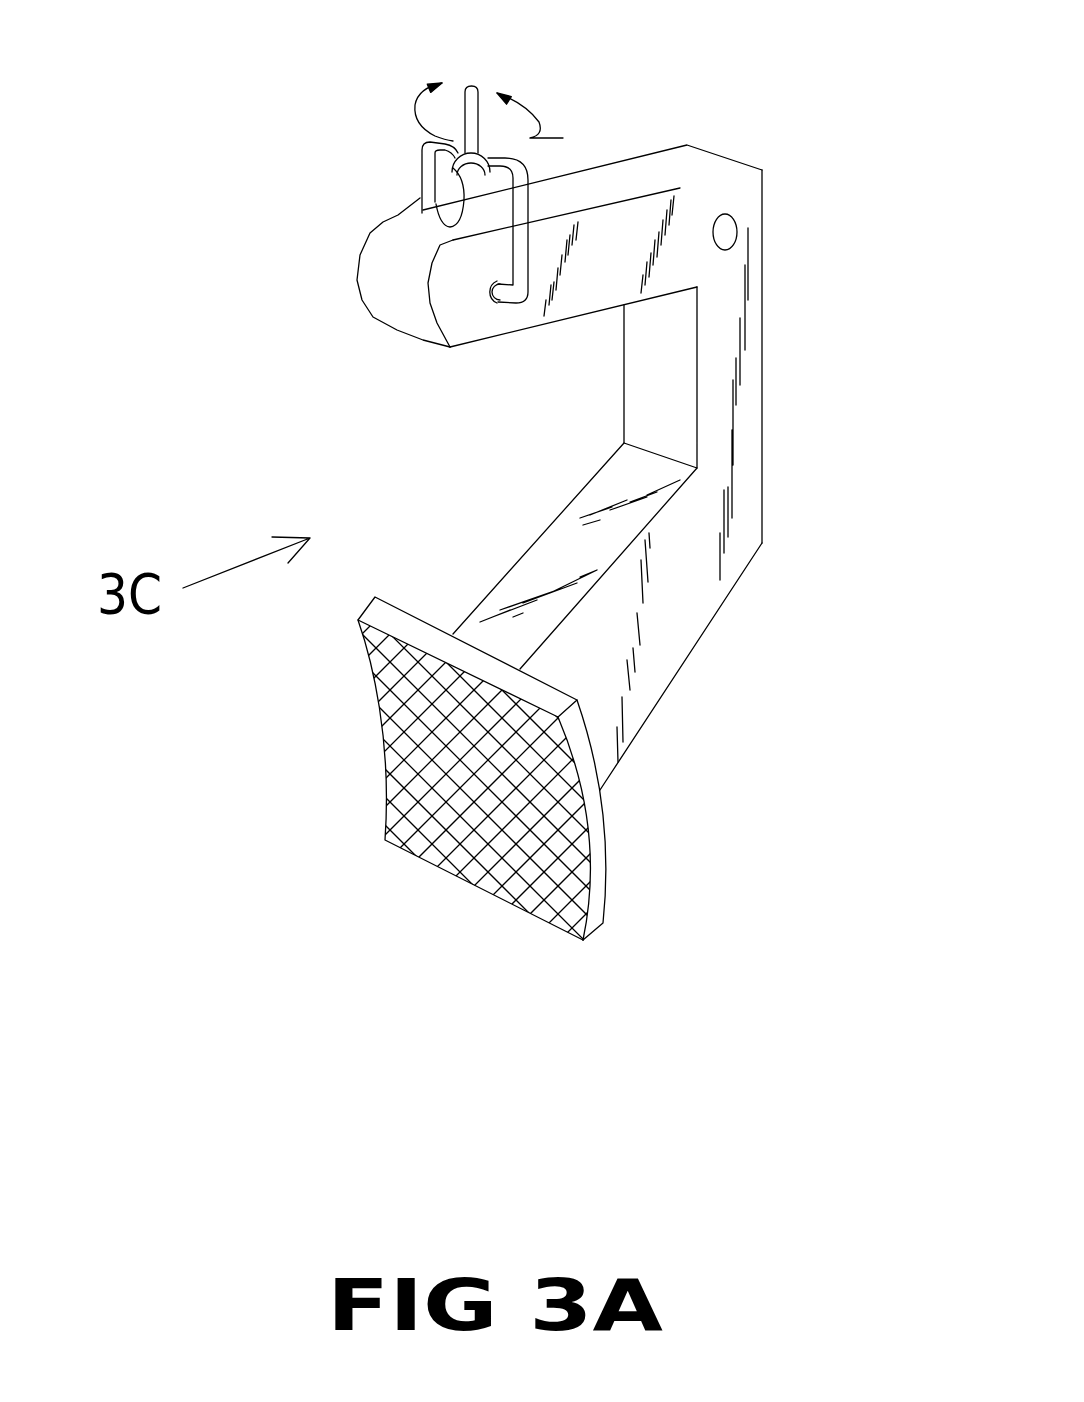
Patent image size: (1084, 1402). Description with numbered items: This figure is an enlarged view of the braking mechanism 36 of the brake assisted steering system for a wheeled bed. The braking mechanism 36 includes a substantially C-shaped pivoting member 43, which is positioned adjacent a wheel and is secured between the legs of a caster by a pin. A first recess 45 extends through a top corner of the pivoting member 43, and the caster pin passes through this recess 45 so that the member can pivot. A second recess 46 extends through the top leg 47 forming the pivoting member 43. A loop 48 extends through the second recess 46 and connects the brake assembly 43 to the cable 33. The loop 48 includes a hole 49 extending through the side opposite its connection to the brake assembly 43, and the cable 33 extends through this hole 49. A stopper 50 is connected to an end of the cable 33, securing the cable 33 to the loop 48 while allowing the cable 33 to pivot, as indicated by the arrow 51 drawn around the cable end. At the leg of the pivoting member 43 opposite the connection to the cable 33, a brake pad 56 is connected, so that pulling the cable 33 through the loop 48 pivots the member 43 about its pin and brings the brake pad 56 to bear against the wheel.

The cable 33 is at (463, 112).
The braking mechanism 36 is at (685, 439).
The pivoting member 43 is at (680, 623).
The first recess 45 is at (736, 226).
The second recess 46 is at (492, 303).
The top leg 47 is at (628, 222).
The loop 48 is at (449, 291).
The hole 49 is at (481, 156).
The stopper 50 is at (423, 210).
The arrow 51 is at (553, 120).
The brake pad 56 is at (497, 877).